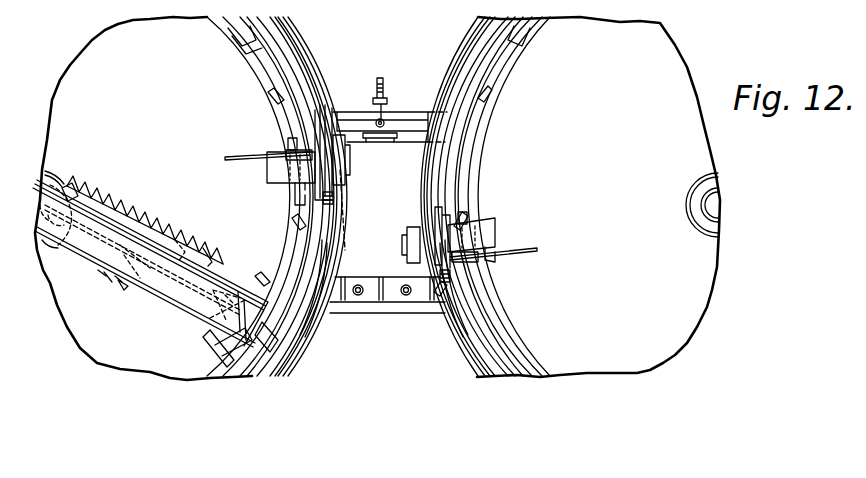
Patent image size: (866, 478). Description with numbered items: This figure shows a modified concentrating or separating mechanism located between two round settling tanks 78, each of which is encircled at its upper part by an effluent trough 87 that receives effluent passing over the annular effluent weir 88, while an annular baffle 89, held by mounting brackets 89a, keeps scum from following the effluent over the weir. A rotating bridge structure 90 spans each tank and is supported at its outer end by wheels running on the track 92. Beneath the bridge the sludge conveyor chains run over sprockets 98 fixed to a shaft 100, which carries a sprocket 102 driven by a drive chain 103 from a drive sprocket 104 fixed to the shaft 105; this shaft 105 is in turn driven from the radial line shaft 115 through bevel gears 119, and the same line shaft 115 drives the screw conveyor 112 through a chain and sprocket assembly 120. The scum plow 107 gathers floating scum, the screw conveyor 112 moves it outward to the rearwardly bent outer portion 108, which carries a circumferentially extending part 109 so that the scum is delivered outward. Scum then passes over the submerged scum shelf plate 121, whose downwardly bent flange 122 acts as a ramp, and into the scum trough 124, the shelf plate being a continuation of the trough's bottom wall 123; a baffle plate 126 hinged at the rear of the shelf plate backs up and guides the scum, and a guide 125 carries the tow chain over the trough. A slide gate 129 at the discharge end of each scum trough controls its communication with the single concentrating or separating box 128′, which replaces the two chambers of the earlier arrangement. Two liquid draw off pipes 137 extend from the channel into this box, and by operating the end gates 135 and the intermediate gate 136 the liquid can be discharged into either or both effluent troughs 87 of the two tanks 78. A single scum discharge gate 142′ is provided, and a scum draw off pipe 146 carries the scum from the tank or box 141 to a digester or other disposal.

The settling tank 78 is at (152, 160).
The effluent trough 87 is at (311, 81).
The effluent weir 88 is at (250, 52).
The baffle 89 is at (272, 98).
The mounting brackets 89a is at (300, 228).
The bridge structure 90 is at (160, 302).
The track 92 is at (298, 44).
The sprockets 98 is at (118, 262).
The shaft 100 is at (108, 279).
The sprocket 102 is at (100, 272).
The drive chain 103 is at (110, 284).
The drive sprocket 104 is at (124, 288).
The shaft 105 is at (130, 282).
The scum plow 107 is at (205, 254).
The outer portion of scum plow 108 is at (222, 301).
The part 109 is at (207, 338).
The screw conveyor 112 is at (178, 240).
The radial line shaft 115 is at (245, 296).
The bevel gears 119 is at (148, 226).
The chain and sprocket assembly 120 is at (68, 190).
The scum shelf plate 121 is at (268, 180).
The flange 122 is at (284, 192).
The bottom wall 123 is at (290, 156).
The scum trough 124 is at (290, 140).
The guide 125 is at (318, 118).
The baffle plate 126 is at (230, 159).
The concentrating or separating box 128′ is at (392, 207).
The slide gate 129 is at (350, 162).
The gates 135 is at (343, 302).
The gate 136 is at (381, 302).
The liquid draw off pipe 137 is at (358, 296).
The tank or box 141 is at (413, 116).
The scum discharge gate 142′ is at (378, 140).
The scum draw off pipe 146 is at (380, 79).